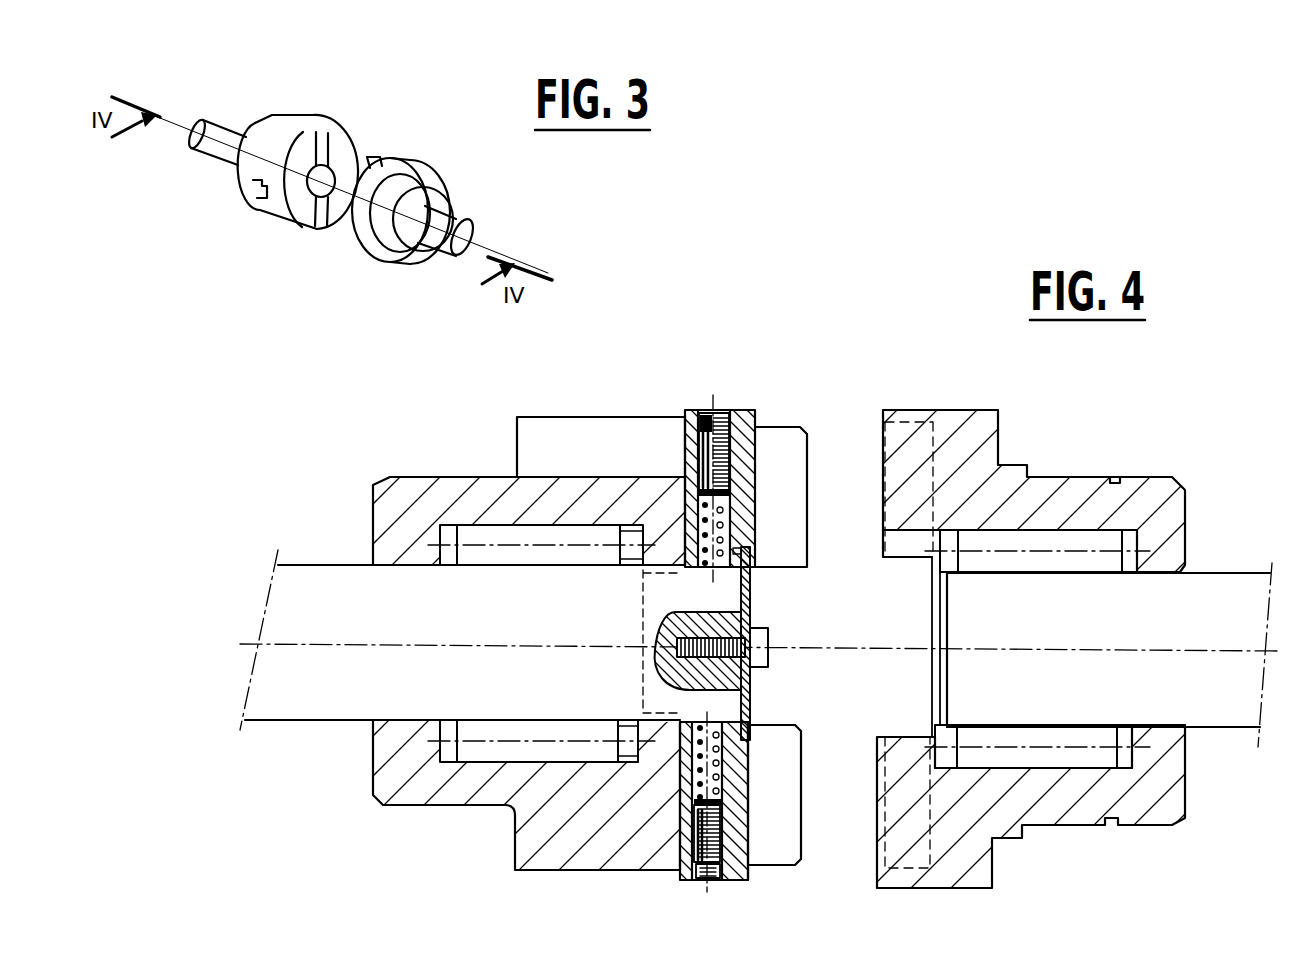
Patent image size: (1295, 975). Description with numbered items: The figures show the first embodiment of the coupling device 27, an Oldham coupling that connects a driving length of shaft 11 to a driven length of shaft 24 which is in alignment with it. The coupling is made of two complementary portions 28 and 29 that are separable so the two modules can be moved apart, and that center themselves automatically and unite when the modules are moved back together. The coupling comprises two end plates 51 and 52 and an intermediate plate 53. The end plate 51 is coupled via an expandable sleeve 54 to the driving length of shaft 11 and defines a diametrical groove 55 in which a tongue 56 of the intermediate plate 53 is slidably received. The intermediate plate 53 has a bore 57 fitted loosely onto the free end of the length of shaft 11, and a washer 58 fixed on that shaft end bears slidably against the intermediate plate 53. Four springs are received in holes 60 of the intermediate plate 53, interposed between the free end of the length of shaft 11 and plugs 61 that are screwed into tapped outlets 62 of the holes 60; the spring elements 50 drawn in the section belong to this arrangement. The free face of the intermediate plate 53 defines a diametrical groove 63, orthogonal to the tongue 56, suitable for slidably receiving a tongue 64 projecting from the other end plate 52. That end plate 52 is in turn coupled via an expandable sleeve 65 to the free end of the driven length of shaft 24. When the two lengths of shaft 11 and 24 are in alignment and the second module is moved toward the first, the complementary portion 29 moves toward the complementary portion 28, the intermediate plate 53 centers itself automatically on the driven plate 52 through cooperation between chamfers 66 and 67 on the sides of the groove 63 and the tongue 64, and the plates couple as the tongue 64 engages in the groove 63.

In FIG. 3, the driving length of shaft 11 is at (210, 148).
In FIG. 4, the driving length of shaft 11 is at (306, 710).
In FIG. 3, the driven length of shaft 24 is at (452, 227).
In FIG. 4, the driven length of shaft 24 is at (1232, 590).
In FIG. 3, the coupling device 27 is at (385, 138).
In FIG. 3, the complementary portion 28 is at (256, 225).
In FIG. 4, the complementary portion 28 is at (490, 444).
In FIG. 3, the complementary portion 29 is at (355, 264).
In FIG. 4, the complementary portion 29 is at (1052, 444).
In FIG. 4, the compression spring 50 is at (775, 647).
In FIG. 4, the end plate 51 is at (530, 815).
In FIG. 4, the end plate 52 is at (970, 855).
In FIG. 4, the intermediate plate 53 is at (752, 825).
In FIG. 4, the expandable sleeve 54 is at (481, 728).
In FIG. 4, the diametrical groove 55 is at (640, 606).
In FIG. 4, the tongue 56 is at (642, 672).
In FIG. 4, the bore 57 is at (703, 705).
In FIG. 4, the washer 58 is at (752, 612).
In FIG. 4, the holes 60 is at (732, 540).
In FIG. 4, the plugs 61 is at (706, 410).
In FIG. 4, the tapped outlets 62 is at (730, 448).
In FIG. 4, the diametrical groove 63 is at (768, 814).
In FIG. 4, the tongue 64 is at (898, 743).
In FIG. 4, the expandable sleeve 65 is at (1085, 740).
In FIG. 4, the chamfer 66 is at (800, 748).
In FIG. 4, the chamfer 67 is at (882, 783).